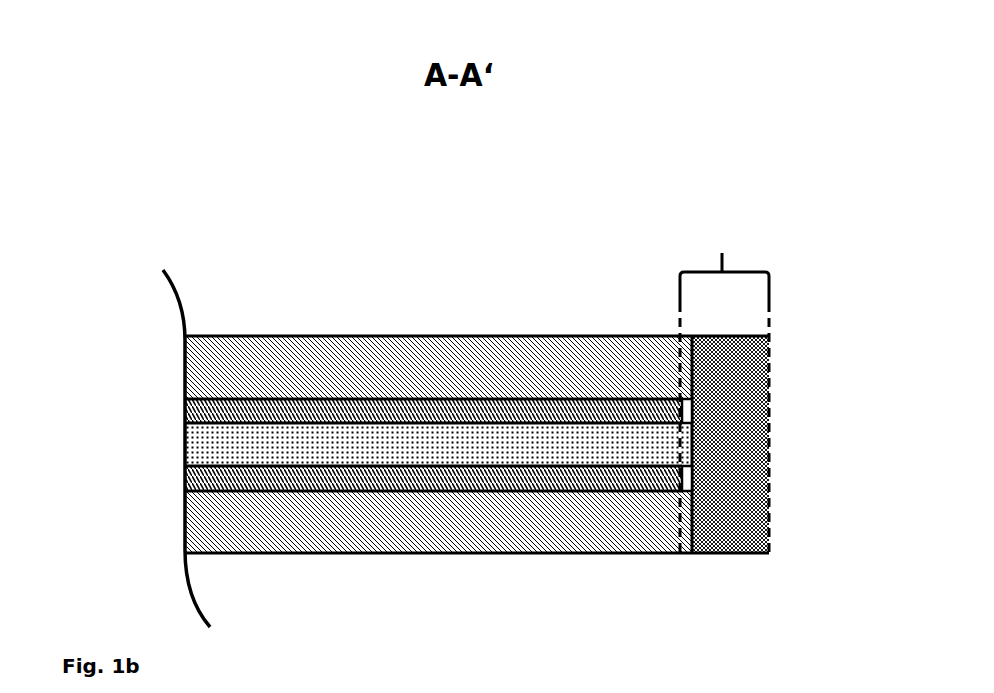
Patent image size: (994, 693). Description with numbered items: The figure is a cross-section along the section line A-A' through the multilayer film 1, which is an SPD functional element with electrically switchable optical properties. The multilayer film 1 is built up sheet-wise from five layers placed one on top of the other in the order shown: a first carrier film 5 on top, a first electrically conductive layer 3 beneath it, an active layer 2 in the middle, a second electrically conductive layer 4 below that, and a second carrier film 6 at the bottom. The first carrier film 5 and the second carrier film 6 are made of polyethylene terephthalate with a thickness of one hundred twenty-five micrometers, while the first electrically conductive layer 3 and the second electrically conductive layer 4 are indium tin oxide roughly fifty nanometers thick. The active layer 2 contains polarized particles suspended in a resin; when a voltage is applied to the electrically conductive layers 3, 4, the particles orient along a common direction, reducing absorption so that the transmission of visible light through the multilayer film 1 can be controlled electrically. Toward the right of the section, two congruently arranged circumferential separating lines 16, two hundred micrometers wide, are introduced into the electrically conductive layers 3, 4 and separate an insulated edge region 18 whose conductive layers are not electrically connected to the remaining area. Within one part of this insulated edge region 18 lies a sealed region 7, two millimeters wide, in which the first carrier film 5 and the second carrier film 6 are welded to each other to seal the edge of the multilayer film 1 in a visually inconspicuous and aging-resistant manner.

The multilayer film 1 is at (205, 276).
The active layer 2 is at (212, 452).
The first electrically conductive layer 3 is at (220, 415).
The second electrically conductive layer 4 is at (215, 478).
The first carrier film 5 is at (220, 378).
The second carrier film 6 is at (218, 525).
The sealed region 7 is at (725, 365).
The separating lines 16 is at (687, 412).
The insulated edge region 18 is at (724, 384).